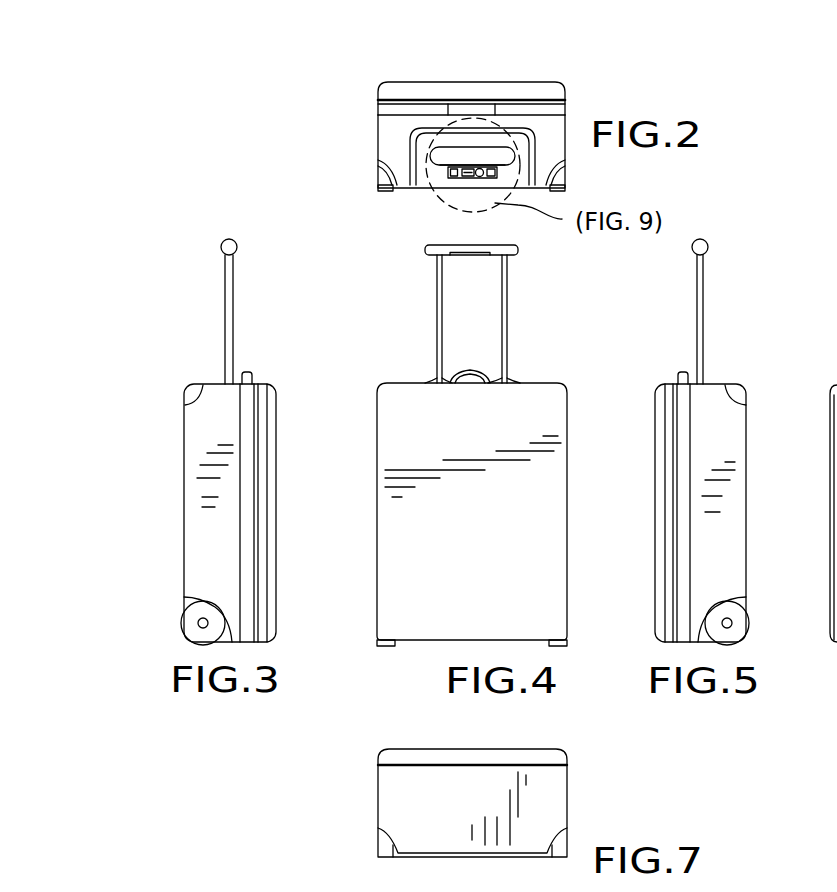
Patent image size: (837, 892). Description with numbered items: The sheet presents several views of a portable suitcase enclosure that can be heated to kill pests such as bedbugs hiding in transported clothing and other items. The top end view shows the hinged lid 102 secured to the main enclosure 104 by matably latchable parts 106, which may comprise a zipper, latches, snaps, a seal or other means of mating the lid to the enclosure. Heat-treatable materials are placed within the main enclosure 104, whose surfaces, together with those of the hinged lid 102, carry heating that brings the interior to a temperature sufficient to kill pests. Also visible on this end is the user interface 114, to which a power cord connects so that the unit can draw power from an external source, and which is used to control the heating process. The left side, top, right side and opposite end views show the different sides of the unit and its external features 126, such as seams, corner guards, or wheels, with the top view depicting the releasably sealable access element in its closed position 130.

In FIG. 2, the hinged lid 102 is at (563, 82).
In FIG. 2, the main enclosure 104 is at (378, 145).
In FIG. 2, the matably latchable parts 106 is at (378, 107).
In FIG. 2, the user interface 114 is at (448, 178).
In FIG. 3, the external features 126 is at (187, 607).
In FIG. 4, the closed position 130 is at (445, 622).